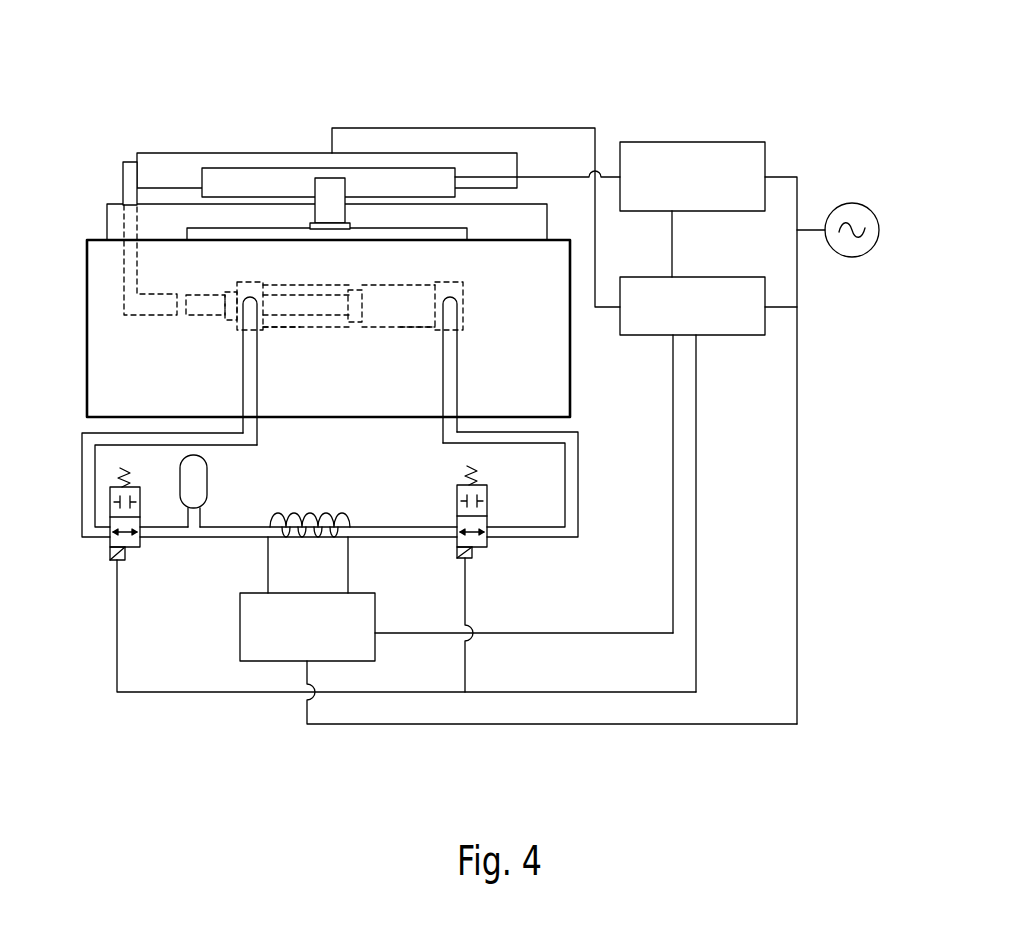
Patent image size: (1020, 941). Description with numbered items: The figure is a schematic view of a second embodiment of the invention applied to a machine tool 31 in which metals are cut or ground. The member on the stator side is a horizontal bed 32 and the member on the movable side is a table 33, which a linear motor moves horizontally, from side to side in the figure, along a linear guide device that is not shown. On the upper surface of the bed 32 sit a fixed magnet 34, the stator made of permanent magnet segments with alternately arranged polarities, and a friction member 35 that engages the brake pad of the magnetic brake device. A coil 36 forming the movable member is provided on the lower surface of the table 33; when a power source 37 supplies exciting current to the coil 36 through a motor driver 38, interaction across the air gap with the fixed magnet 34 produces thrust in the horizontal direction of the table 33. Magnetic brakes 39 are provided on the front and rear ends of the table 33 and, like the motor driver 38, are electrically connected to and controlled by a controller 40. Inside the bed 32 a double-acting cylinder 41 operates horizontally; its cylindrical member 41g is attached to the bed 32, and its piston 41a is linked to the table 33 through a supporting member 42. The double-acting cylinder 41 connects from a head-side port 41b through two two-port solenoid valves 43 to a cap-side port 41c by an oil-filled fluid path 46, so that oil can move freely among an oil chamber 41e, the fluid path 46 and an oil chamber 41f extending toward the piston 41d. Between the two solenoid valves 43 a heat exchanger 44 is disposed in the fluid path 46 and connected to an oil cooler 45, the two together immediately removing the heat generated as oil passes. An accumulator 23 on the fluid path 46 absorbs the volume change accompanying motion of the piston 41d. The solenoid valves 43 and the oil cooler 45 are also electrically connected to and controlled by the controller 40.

The machine tool 31 is at (692, 52).
The bed 32 is at (98, 250).
The table 33 is at (163, 152).
The fixed magnet 34 is at (528, 212).
The friction member 35 is at (225, 233).
The coil 36 is at (387, 182).
The power source 37 is at (850, 203).
The motor driver 38 is at (750, 142).
The magnetic brake 39 is at (325, 187).
The controller 40 is at (727, 277).
The double-acting cylinder 41 is at (320, 328).
The piston 41a is at (272, 283).
The head-side port 41b is at (233, 295).
The cap-side port 41c is at (465, 288).
The piston 41d is at (350, 282).
The oil chamber 41e is at (285, 330).
The oil chamber 41f is at (428, 328).
The cylindrical member 41g is at (420, 283).
The supporting member 42 is at (130, 175).
The 2-port solenoid valve 43 is at (108, 545).
The heat exchanger 44 is at (322, 515).
The oil cooler 45 is at (240, 613).
The fluid path 46 is at (573, 482).
The accumulator 23 is at (202, 472).